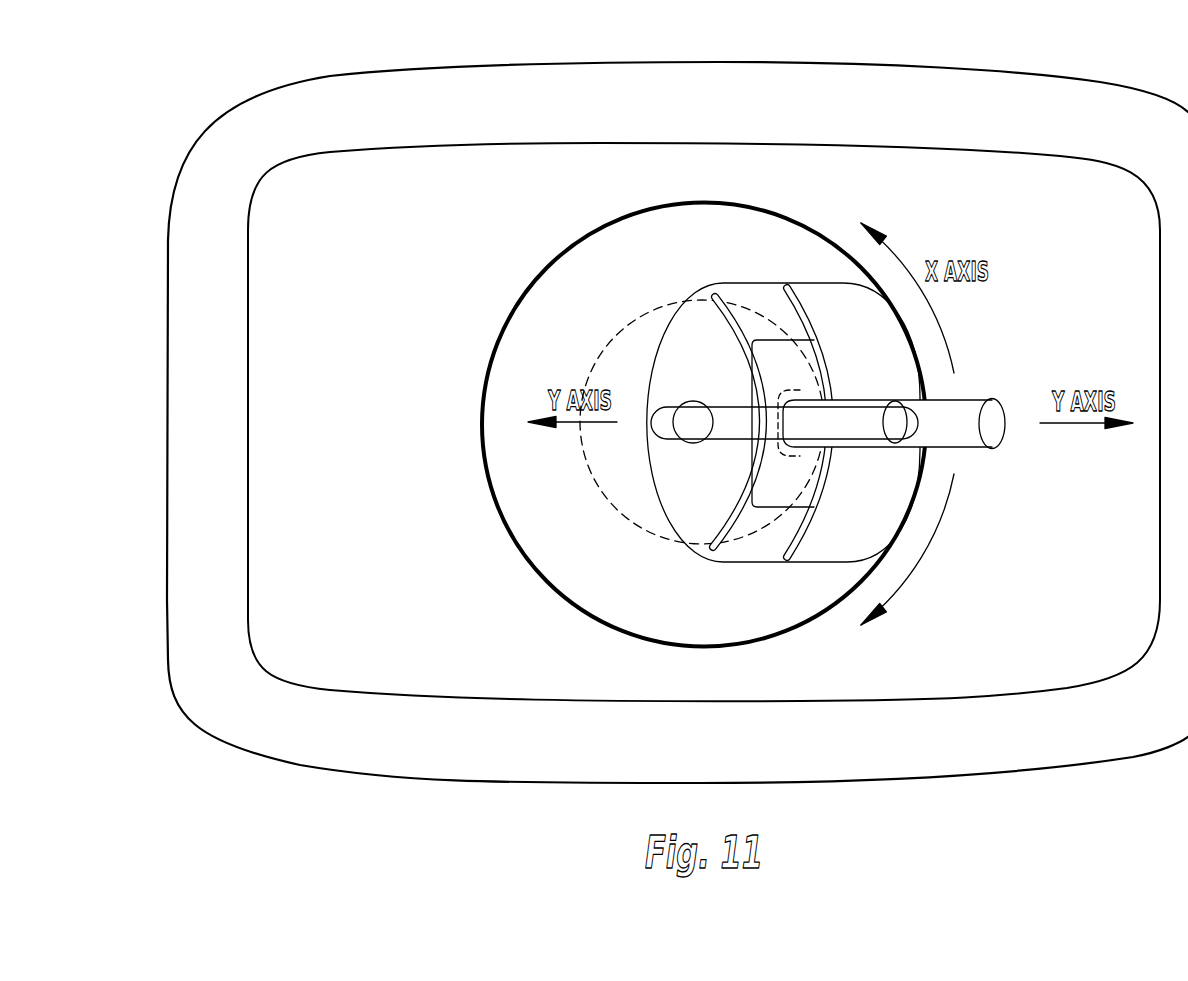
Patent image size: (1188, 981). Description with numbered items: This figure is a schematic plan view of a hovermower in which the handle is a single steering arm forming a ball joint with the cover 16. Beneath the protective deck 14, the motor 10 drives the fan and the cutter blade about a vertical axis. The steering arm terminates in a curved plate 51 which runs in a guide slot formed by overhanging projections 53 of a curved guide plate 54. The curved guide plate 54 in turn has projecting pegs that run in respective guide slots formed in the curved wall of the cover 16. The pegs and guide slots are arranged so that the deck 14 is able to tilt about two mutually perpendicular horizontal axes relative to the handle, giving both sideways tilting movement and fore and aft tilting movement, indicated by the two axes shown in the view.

The motor 10 is at (617, 507).
The protective deck 14 is at (999, 170).
The cover 16 is at (488, 477).
The curved plate 51 is at (780, 353).
The overhanging projections 53 is at (737, 327).
The curved guide plate 54 is at (675, 383).